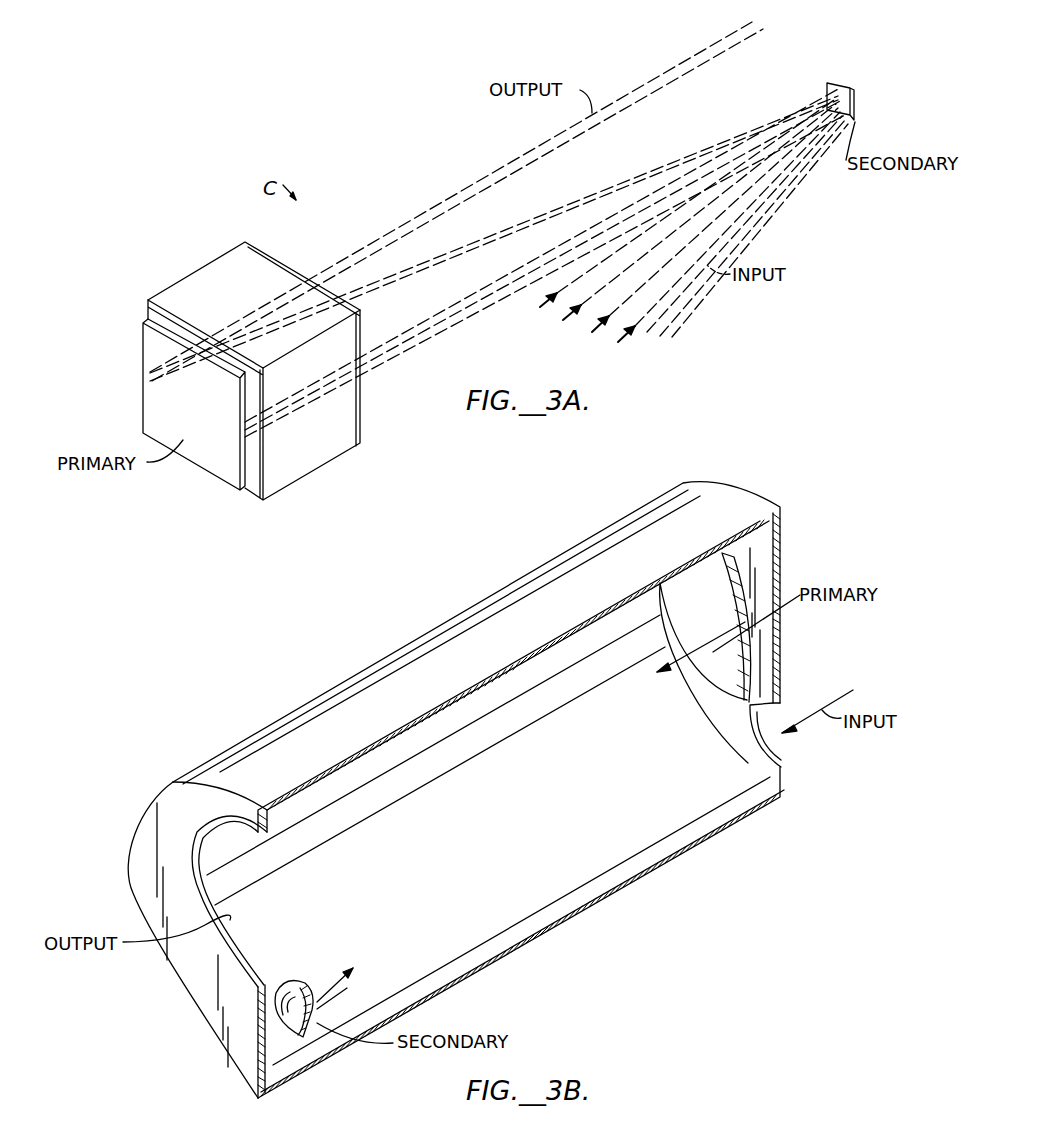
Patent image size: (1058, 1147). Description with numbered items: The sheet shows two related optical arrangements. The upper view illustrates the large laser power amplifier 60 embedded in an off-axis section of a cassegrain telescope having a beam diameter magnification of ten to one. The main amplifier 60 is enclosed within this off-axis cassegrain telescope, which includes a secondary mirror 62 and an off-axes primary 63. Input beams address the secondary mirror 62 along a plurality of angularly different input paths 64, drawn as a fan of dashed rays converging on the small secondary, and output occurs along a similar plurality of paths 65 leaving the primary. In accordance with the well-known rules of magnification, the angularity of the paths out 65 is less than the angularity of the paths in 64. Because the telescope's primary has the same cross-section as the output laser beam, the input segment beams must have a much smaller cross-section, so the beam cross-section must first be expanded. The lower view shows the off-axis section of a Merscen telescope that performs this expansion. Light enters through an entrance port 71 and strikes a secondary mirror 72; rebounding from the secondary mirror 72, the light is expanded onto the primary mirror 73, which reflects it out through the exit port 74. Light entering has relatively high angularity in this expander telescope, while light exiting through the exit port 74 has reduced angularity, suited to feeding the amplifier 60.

In FIG. 3A, the laser power amplifier 60 is at (188, 278).
In FIG. 3A, the secondary mirror 62 is at (856, 86).
In FIG. 3A, the off-axes primary 63 is at (210, 462).
In FIG. 3A, the input paths 64 is at (648, 328).
In FIG. 3A, the output paths 65 is at (700, 47).
In FIG. 3B, the entrance port 71 is at (778, 718).
In FIG. 3B, the secondary mirror 72 is at (310, 990).
In FIG. 3B, the primary mirror 73 is at (710, 600).
In FIG. 3B, the exit port 74 is at (210, 850).